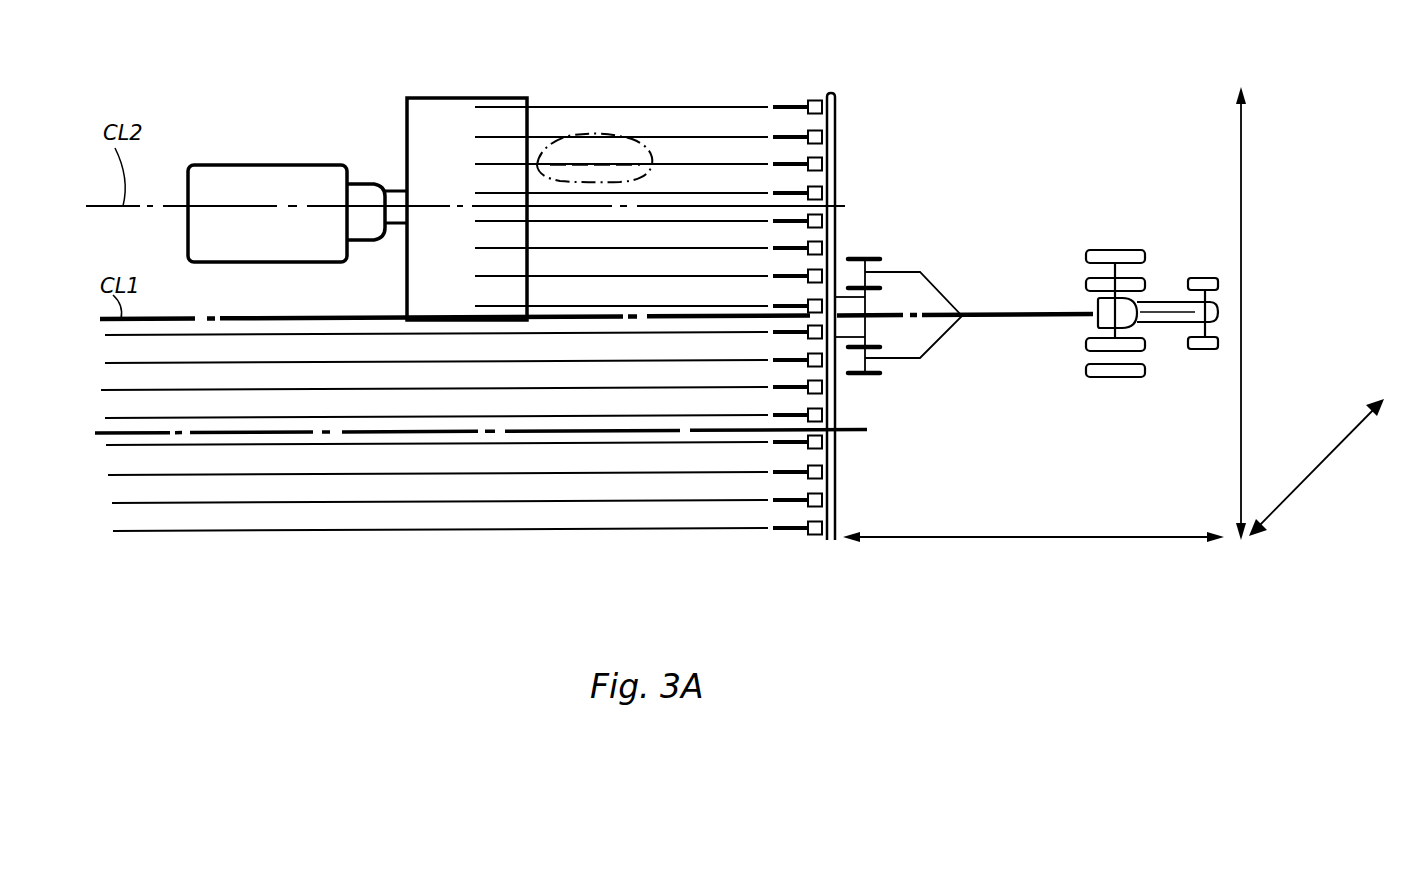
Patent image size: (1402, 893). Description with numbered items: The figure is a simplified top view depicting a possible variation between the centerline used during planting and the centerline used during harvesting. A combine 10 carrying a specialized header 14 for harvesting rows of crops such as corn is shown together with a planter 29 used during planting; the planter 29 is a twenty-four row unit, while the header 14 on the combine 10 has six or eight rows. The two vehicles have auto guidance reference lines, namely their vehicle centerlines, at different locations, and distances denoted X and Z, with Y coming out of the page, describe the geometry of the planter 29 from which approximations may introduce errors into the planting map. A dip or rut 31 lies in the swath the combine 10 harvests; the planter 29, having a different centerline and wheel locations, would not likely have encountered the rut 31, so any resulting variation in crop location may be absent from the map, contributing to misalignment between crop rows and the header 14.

The combine 10 is at (294, 130).
The header 14 is at (484, 98).
The rut 31 is at (608, 148).
The planter 29 is at (1066, 180).